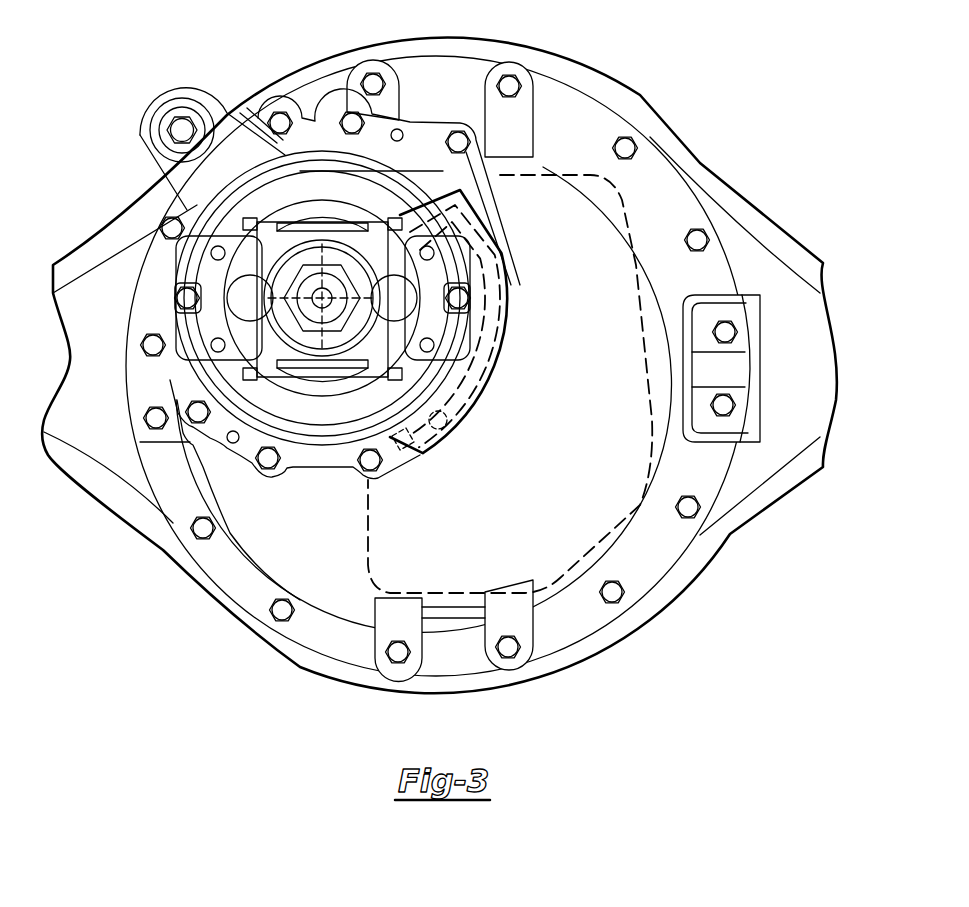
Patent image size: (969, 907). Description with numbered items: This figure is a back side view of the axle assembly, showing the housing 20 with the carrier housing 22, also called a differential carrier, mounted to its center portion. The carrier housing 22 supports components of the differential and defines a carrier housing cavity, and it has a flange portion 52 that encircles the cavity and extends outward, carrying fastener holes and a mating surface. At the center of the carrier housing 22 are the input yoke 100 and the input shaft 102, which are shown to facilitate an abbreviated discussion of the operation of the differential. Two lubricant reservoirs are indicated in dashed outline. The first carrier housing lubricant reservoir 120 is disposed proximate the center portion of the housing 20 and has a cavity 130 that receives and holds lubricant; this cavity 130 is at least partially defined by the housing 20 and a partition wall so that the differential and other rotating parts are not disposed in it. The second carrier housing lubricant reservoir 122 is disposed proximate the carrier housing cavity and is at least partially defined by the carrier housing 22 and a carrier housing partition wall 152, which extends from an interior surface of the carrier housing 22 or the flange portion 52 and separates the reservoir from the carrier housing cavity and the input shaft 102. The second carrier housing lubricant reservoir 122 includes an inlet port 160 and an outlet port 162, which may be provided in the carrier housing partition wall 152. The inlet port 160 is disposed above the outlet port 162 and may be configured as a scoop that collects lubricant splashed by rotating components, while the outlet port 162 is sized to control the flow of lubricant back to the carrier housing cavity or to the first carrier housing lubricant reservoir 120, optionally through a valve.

The housing 20 is at (80, 247).
The carrier housing 22 is at (322, 118).
The flange portion 52 is at (653, 140).
The input yoke 100 is at (218, 240).
The input shaft 102 is at (243, 217).
The first carrier housing lubricant reservoir 120 is at (653, 257).
The second carrier housing lubricant reservoir 122 is at (495, 222).
The cavity 130 is at (601, 372).
The carrier housing partition wall 152 is at (490, 273).
The inlet port 160 is at (395, 220).
The outlet port 162 is at (405, 447).